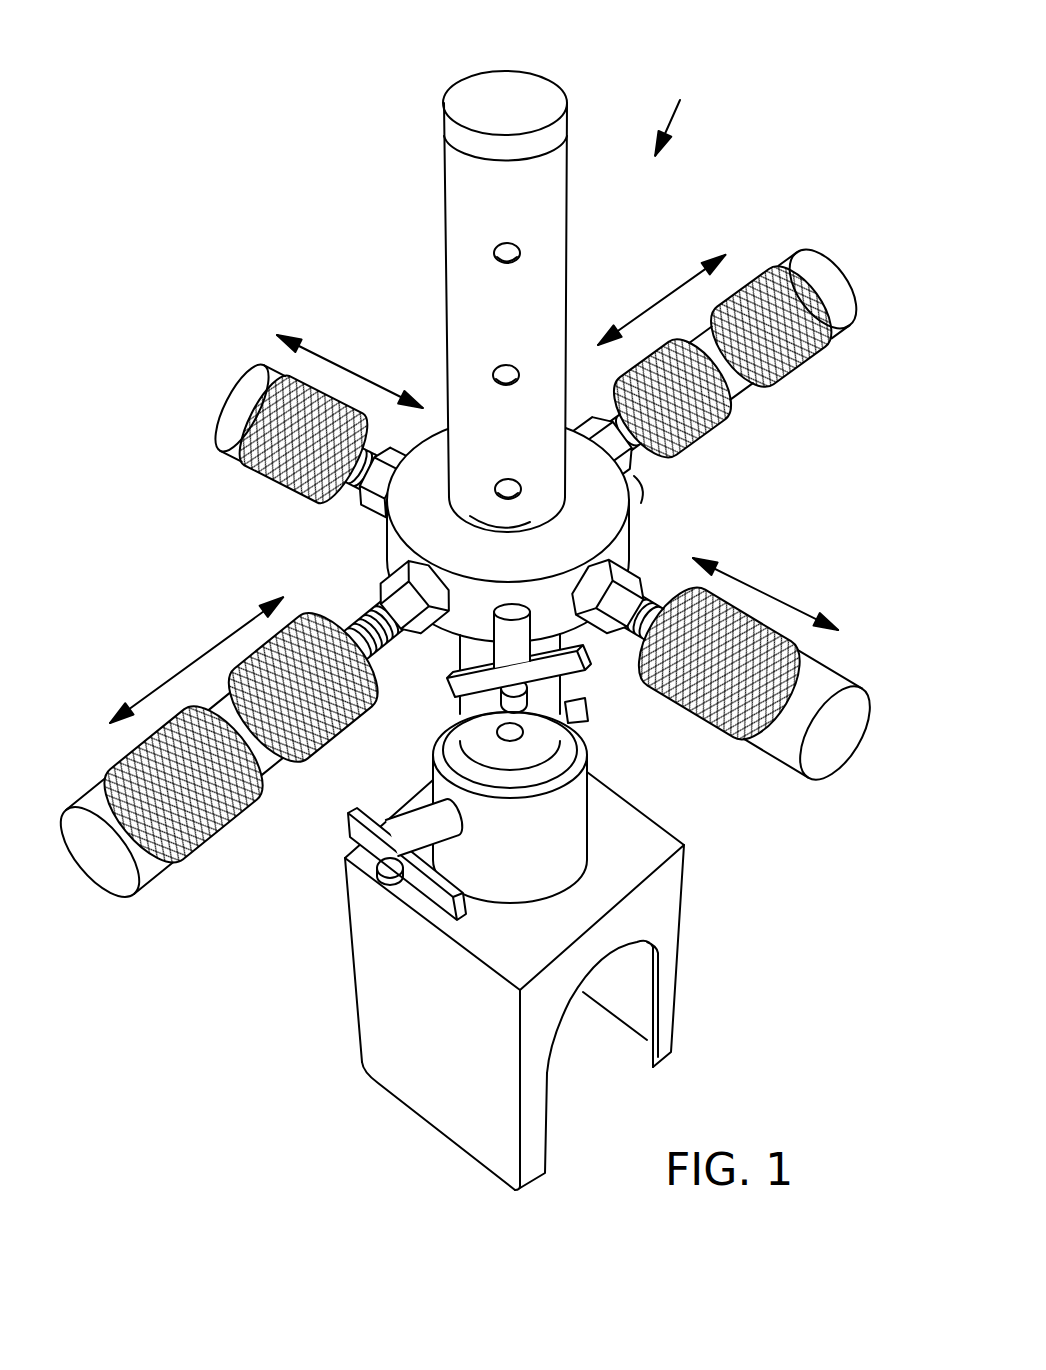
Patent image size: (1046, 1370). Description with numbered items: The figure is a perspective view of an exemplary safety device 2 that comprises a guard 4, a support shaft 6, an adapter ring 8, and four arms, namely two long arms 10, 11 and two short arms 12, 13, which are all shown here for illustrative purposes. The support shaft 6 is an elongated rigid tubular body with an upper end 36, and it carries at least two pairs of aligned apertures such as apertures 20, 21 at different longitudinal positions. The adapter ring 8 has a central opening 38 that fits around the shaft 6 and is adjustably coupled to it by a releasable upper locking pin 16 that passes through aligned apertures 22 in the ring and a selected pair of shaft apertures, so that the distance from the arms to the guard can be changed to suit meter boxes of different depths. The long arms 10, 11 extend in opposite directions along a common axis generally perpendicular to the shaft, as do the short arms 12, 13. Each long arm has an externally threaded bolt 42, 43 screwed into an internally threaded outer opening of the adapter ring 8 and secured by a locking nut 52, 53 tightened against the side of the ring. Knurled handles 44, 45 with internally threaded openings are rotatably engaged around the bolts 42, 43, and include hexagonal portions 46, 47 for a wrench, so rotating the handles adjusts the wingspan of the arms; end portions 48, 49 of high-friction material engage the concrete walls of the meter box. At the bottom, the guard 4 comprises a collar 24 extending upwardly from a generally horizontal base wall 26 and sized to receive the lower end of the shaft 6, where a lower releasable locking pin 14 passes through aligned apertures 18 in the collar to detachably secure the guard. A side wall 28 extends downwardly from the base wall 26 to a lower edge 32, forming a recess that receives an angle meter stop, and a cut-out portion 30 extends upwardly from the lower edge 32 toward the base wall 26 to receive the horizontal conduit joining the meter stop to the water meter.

The safety device 2 is at (670, 116).
The guard 4 is at (514, 986).
The support shaft 6 is at (491, 278).
The adapter ring 8 is at (504, 530).
The long arm 10 is at (253, 753).
The long arm 11 is at (720, 347).
The short arm 12 is at (851, 677).
The short arm 13 is at (247, 378).
The lower releasable locking pin 14 is at (370, 849).
The upper locking pin 16 is at (582, 704).
The apertures 18 is at (448, 800).
The aperture 20 is at (497, 253).
The aperture 21 is at (500, 372).
The apertures 22 is at (440, 630).
The collar 24 is at (568, 818).
The base wall 26 is at (636, 1016).
The side wall 28 is at (376, 968).
The cut-out portion 30 is at (557, 1032).
The lower edge 32 is at (468, 1158).
The upper end 36 is at (482, 97).
The central opening 38 is at (470, 524).
The bolt 42 is at (399, 657).
The bolt 43 is at (667, 463).
The handle 44 is at (213, 813).
The handle 45 is at (717, 433).
The polygonal portion 46 is at (280, 770).
The polygonal portion 47 is at (748, 387).
The end portion 48 is at (104, 868).
The end portion 49 is at (818, 276).
The locking nut 52 is at (395, 582).
The locking nut 53 is at (642, 490).